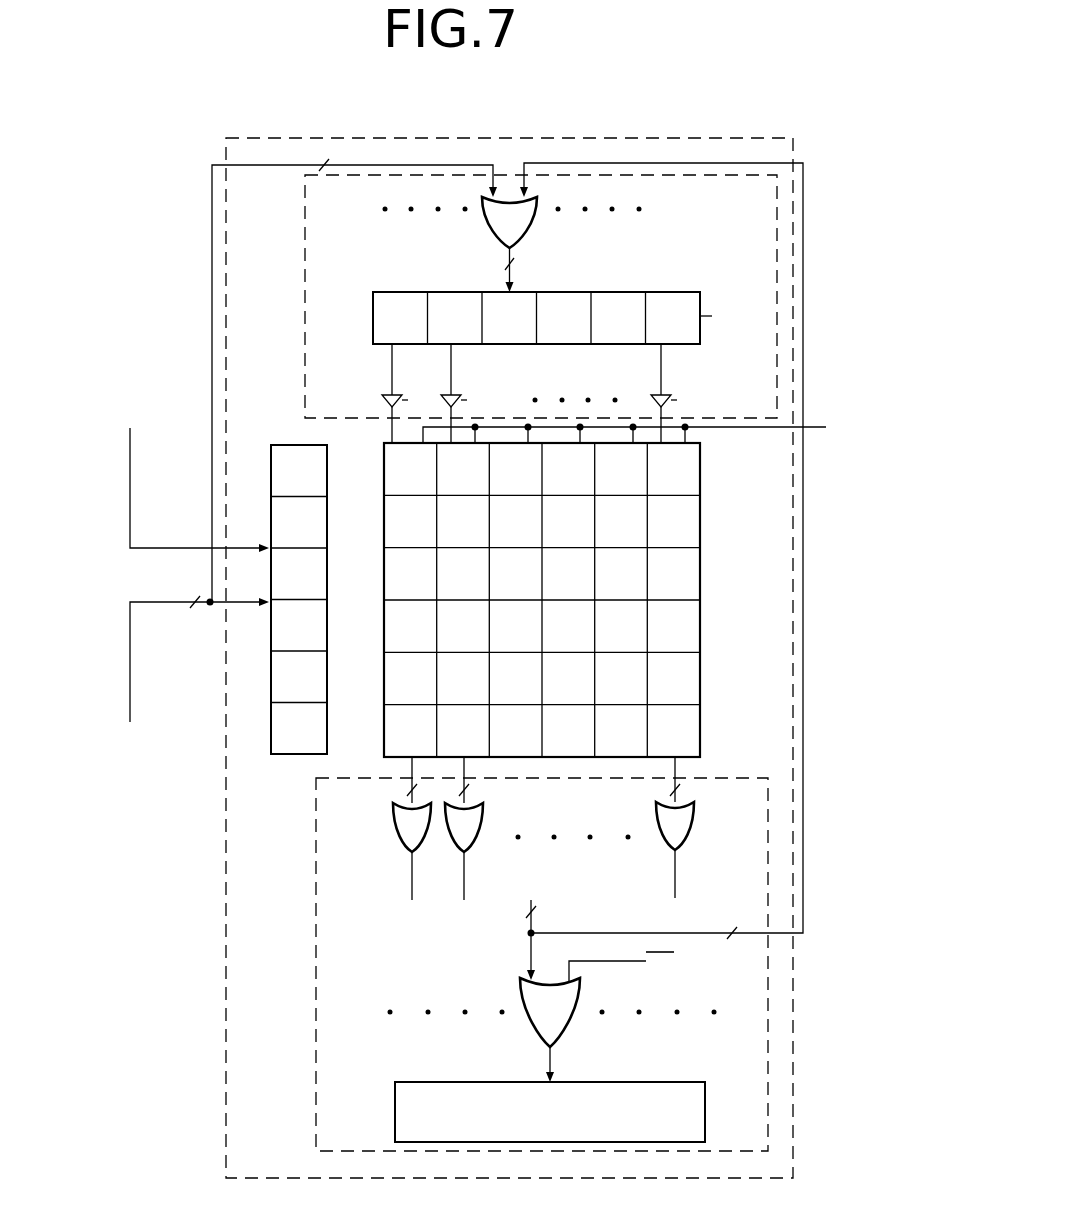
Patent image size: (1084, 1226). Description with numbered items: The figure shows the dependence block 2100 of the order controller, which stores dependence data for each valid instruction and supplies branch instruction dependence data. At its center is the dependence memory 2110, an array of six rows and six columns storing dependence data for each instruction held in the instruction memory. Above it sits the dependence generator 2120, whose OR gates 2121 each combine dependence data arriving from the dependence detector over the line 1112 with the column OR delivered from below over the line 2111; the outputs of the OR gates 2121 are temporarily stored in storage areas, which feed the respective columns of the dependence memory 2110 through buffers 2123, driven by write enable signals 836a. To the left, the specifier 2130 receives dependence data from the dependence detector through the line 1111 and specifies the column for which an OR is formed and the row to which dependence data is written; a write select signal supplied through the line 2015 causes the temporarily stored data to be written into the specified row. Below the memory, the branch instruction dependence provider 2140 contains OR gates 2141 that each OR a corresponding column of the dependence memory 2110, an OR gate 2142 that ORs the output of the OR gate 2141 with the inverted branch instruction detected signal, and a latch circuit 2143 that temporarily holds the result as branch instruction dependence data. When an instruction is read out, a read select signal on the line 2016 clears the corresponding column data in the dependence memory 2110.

The dependence block 2100 is at (224, 931).
The line 1111 is at (166, 610).
The line 1112 is at (212, 272).
The line 2015 is at (155, 542).
The line 2016 is at (811, 425).
The dependence memory 2110 is at (700, 444).
The line 2111 is at (803, 218).
The dependence generator 2120 is at (306, 292).
The OR gate 2121 is at (536, 226).
The buffer 2123 is at (666, 394).
The write enable signal 836a is at (461, 398).
The specifier 2130 is at (286, 756).
The branch instruction dependence provider 2140 is at (313, 1064).
The OR gate 2141 is at (394, 829).
The OR gate 2142 is at (520, 990).
The latch circuit 2143 is at (626, 1082).